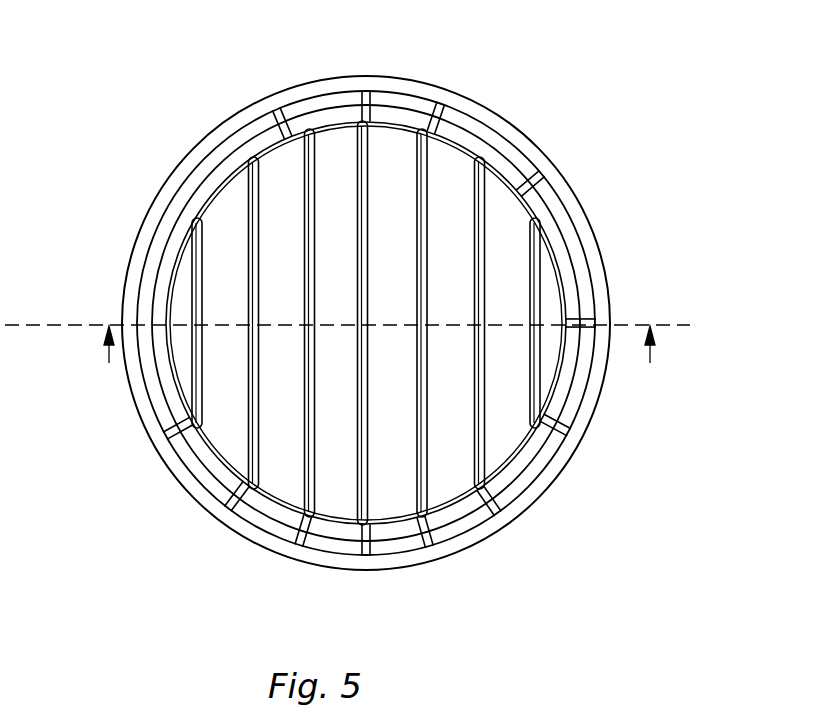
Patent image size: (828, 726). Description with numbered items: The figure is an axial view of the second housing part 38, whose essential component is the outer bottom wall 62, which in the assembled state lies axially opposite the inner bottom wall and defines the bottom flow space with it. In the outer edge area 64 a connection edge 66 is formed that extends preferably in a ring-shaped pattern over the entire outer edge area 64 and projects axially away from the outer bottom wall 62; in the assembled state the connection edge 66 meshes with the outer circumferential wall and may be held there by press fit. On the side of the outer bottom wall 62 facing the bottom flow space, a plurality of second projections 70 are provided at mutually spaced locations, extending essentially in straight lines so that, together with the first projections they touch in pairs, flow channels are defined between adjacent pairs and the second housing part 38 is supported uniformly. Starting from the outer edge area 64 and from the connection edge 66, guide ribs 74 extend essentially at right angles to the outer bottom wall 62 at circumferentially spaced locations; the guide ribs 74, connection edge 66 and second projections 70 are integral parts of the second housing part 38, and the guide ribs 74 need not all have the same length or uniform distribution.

The second housing part 38 is at (120, 88).
The outer bottom wall 62 is at (502, 433).
The outer edge area 64 is at (603, 292).
The connection edge 66 is at (568, 229).
The second projections 70 is at (374, 164).
The guide ribs 74 is at (238, 507).